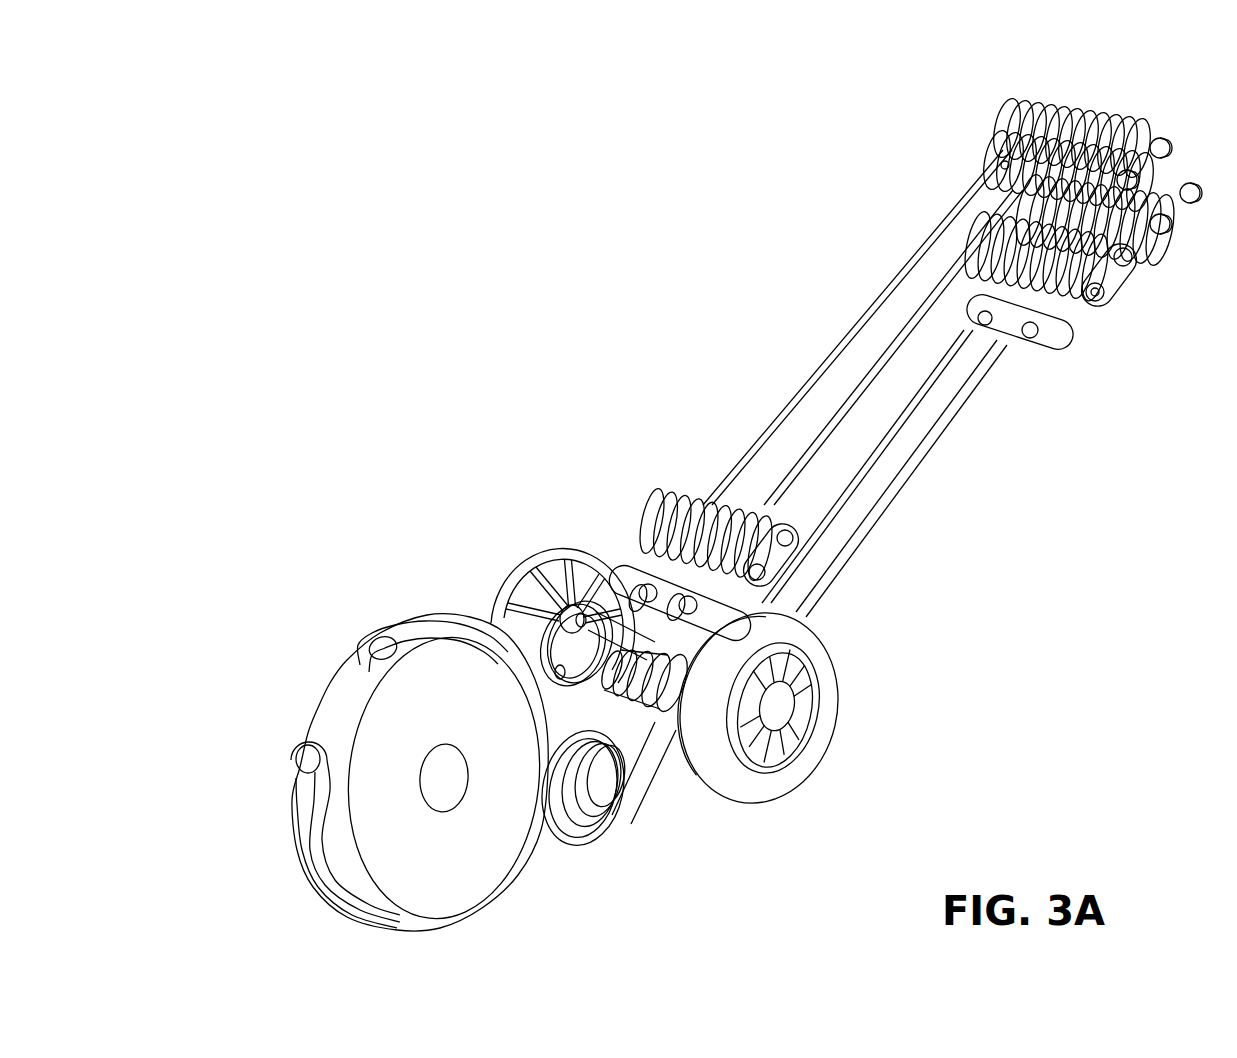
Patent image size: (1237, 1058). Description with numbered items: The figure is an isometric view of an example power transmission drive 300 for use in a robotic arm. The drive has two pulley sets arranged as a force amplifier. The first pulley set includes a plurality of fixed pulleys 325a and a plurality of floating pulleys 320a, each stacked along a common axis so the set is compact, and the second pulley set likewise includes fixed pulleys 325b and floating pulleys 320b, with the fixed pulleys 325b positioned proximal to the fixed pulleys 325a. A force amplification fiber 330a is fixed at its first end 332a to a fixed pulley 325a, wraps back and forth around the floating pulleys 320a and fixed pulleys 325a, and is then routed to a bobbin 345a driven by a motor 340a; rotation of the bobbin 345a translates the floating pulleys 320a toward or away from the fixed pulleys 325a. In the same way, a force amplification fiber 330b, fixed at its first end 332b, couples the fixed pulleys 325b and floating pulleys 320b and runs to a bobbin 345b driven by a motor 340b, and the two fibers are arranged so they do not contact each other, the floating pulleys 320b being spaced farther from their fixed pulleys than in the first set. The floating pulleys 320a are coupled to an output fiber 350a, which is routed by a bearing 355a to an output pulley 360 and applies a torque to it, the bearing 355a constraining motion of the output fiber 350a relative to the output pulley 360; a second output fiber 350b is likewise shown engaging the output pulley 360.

The power transmission drive 300 is at (305, 63).
The floating pulley 320a is at (1045, 350).
The floating pulley 320b is at (800, 520).
The fixed pulley 325a is at (1182, 165).
The fixed pulley 325b is at (1040, 100).
The force amplification fiber 330a is at (860, 385).
The force amplification fiber 330b is at (1020, 297).
The first end 332a is at (1135, 265).
The first end 332b is at (1000, 165).
The motor 340a is at (512, 585).
The motor 340b is at (832, 680).
The bobbin 345a is at (566, 562).
The bobbin 345b is at (660, 707).
The output fiber 350a is at (405, 625).
The output fiber 350b is at (292, 790).
The bearing 355a is at (578, 815).
The output pulley 360 is at (457, 832).